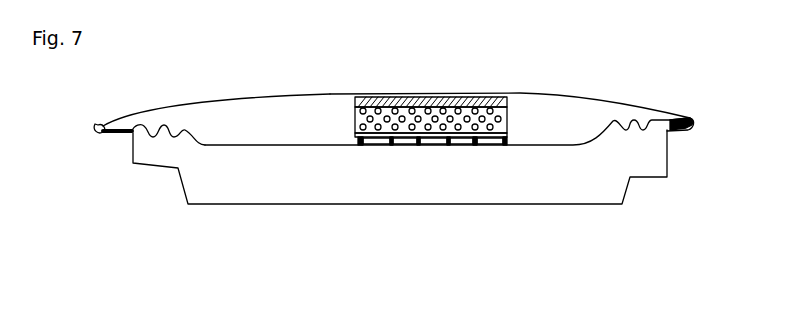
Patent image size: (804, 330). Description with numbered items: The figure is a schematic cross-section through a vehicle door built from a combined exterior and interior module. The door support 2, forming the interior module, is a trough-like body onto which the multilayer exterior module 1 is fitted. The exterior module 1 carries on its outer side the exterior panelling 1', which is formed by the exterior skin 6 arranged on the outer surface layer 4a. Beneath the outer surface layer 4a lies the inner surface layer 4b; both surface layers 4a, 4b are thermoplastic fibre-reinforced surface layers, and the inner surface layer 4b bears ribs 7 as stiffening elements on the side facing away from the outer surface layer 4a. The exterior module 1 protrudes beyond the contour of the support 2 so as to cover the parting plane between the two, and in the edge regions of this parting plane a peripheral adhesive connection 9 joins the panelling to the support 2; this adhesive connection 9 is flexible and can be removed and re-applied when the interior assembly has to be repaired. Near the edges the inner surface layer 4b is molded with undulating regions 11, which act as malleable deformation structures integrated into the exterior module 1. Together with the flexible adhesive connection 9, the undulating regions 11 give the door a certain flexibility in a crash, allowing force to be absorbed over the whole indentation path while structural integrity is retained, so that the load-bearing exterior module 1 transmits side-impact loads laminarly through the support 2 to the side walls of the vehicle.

The exterior module 1 is at (392, 71).
The exterior panelling 1' is at (216, 75).
The door support 2 is at (435, 206).
The outer surface layer 4a is at (385, 97).
The inner surface layer 4b is at (373, 147).
The exterior skin 6 is at (430, 97).
The ribs 7 is at (472, 148).
The adhesive connection 9 is at (681, 133).
The undulating regions 11 is at (647, 121).